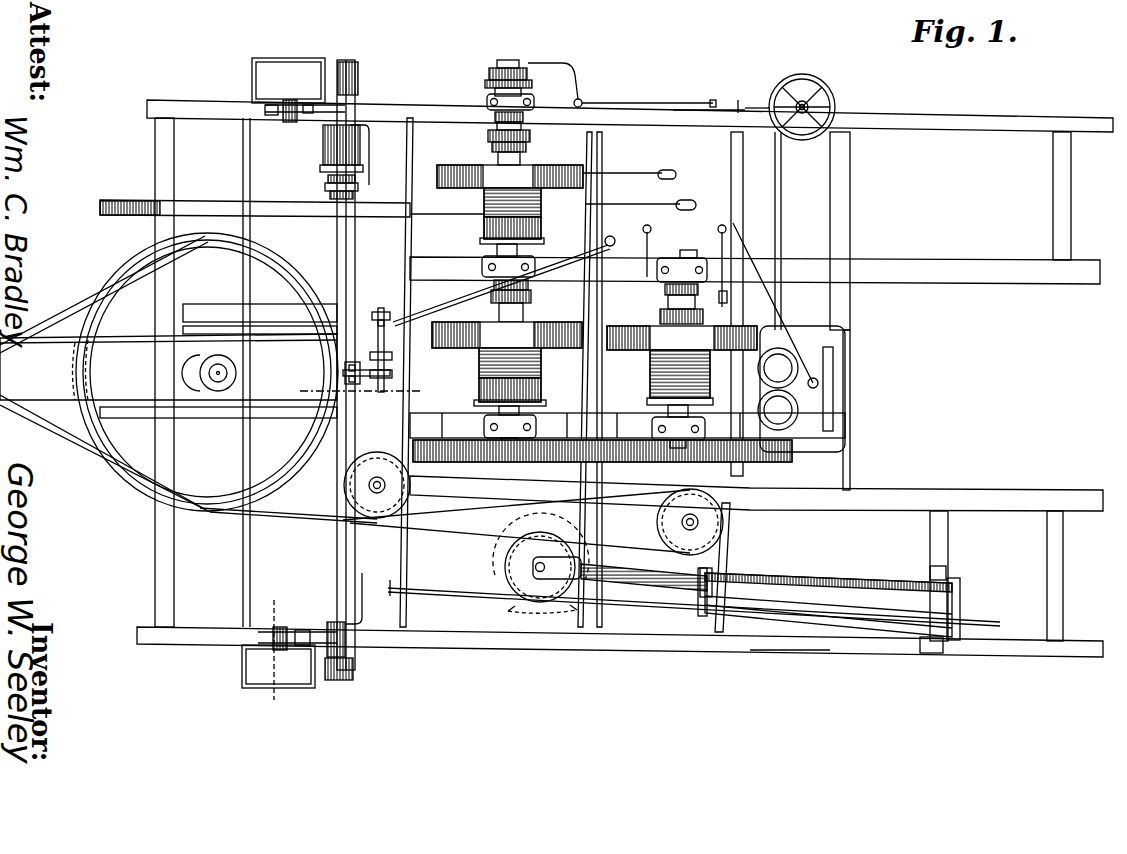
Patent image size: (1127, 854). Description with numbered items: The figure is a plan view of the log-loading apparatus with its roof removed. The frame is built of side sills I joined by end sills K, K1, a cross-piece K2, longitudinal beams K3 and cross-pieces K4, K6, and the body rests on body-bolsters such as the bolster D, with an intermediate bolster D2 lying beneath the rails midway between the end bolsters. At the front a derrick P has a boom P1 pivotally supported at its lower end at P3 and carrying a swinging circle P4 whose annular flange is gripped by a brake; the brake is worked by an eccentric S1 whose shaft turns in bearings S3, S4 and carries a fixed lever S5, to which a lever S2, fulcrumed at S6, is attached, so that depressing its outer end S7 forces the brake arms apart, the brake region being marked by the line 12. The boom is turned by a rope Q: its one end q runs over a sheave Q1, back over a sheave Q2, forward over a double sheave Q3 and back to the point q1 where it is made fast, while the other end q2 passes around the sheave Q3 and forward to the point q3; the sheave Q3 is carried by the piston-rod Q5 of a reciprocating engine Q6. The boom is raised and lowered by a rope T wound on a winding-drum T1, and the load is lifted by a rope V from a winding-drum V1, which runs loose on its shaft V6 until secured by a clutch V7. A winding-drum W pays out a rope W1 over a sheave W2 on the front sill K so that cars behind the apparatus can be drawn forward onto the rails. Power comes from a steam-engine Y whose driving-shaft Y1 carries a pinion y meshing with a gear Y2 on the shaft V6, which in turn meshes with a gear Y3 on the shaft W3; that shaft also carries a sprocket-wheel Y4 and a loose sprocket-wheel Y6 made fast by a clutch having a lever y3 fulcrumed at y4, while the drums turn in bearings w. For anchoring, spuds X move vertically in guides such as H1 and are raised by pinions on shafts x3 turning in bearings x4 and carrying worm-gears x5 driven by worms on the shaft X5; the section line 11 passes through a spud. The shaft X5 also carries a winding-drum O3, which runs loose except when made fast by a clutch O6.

The end sill K is at (155, 584).
The end sill K1 is at (948, 541).
The cross-piece K2 is at (406, 270).
The longitudinal beams K3 is at (1006, 502).
The cross-pieces K4 is at (585, 172).
The cross-pieces K6 is at (765, 555).
The side sills I is at (672, 127).
The body-bolster D is at (292, 228).
The bolster D2 is at (780, 192).
The derrick P is at (169, 372).
The boom P1 is at (168, 367).
The pivot P3 is at (213, 392).
The swinging circle P4 is at (233, 505).
The guide H1 is at (283, 60).
The spud X is at (250, 80).
The shaft x3 is at (292, 115).
The bearings x4 is at (300, 628).
The worm-gear x5 is at (356, 82).
The shaft X5 is at (337, 540).
The section line 11 11 is at (262, 625).
The brake-mechanism detail indicator 12 is at (371, 389).
The winding-drum O3 is at (363, 150).
The clutch O6 is at (363, 182).
The winding-drum W is at (545, 226).
The rope W1 is at (484, 210).
The sheave W2 is at (118, 193).
The shaft W3 is at (518, 62).
The steam-engine Y is at (803, 326).
The driving-shaft Y1 is at (420, 120).
The gear Y2 is at (660, 462).
The gear Y3 is at (495, 462).
The sprocket-wheel Y4 is at (775, 305).
The sprocket-wheel Y6 is at (497, 72).
The pinion y is at (535, 66).
The lever y3 is at (612, 103).
The fulcrum y4 is at (580, 98).
The bearings w is at (506, 253).
The rope T is at (440, 387).
The winding-drum T1 is at (543, 387).
The rope V is at (625, 404).
The winding-drum V1 is at (714, 396).
The shaft V6 is at (685, 250).
The clutch V7 is at (663, 302).
The eccentric S1 is at (378, 336).
The lever S2 is at (525, 296).
The bearing S3 is at (392, 376).
The bearing S4 is at (380, 312).
The fixed lever S5 is at (392, 351).
The fulcrum S6 is at (450, 305).
The outer end of lever S7 is at (510, 268).
The rope Q is at (504, 546).
The sheave Q1 is at (390, 463).
The sheave Q2 is at (760, 523).
The double sheave Q3 is at (508, 570).
The piston-rod Q5 is at (660, 575).
The reciprocating engine Q6 is at (829, 595).
The rope end q is at (542, 492).
The fastening point q1 is at (630, 626).
The rope end q2 is at (507, 605).
The fastening point q3 is at (367, 598).